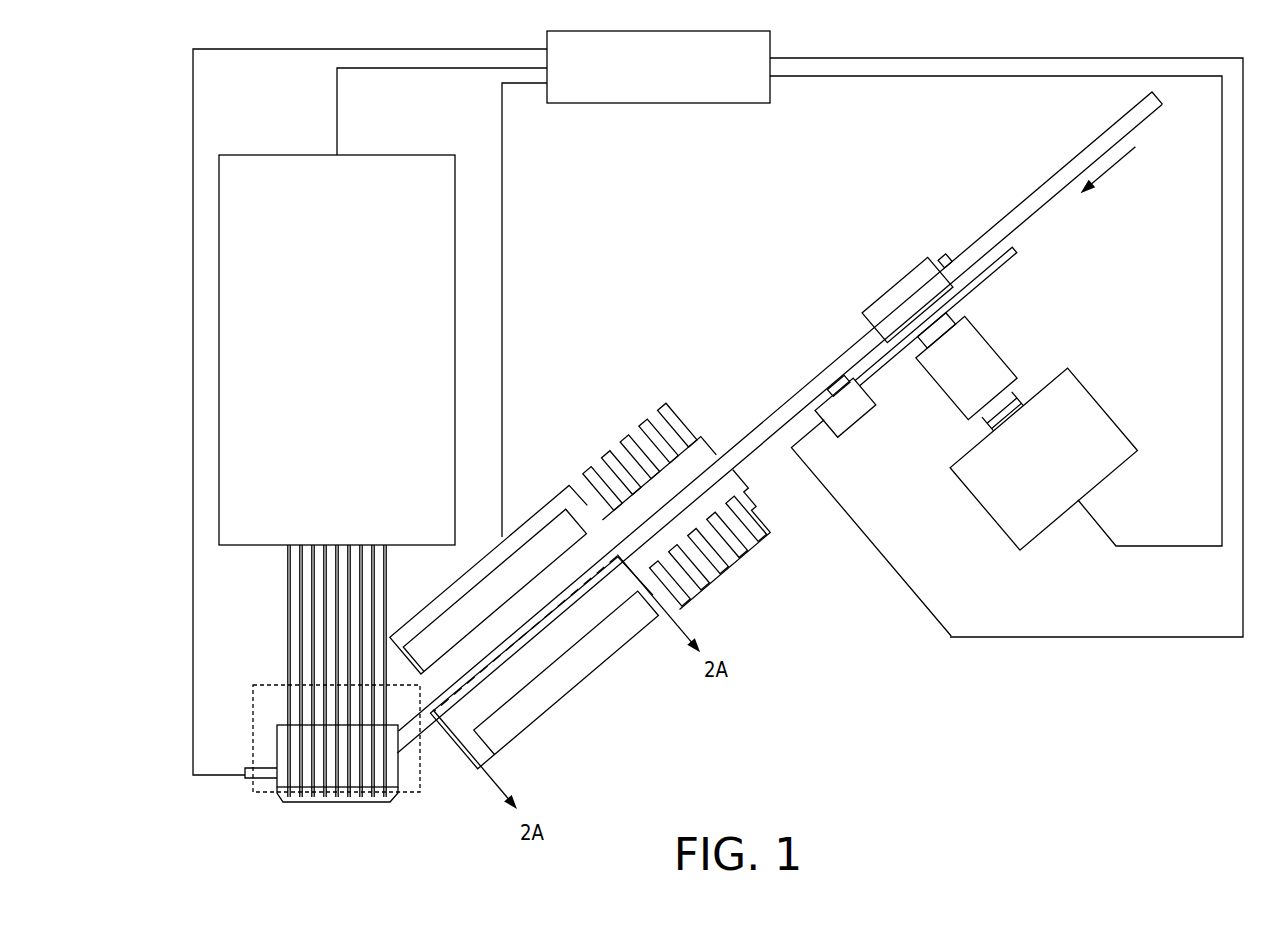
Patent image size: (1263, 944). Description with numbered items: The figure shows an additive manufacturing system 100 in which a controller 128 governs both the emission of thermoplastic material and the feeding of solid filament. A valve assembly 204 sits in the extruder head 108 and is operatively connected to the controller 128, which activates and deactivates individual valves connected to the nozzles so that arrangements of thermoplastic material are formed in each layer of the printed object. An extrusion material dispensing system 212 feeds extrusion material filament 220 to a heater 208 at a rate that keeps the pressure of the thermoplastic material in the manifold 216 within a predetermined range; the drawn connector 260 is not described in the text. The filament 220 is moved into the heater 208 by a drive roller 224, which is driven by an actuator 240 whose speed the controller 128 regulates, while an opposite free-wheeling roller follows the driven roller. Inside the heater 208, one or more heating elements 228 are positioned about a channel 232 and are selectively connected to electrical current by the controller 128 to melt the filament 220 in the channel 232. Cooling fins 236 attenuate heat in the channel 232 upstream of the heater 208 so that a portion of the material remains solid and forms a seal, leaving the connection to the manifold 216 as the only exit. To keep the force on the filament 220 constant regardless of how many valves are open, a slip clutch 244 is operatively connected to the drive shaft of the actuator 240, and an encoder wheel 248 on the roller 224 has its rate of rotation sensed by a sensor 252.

The additive manufacturing system 100 is at (155, 82).
The controller 128 is at (658, 104).
The valve assembly 204 is at (286, 153).
The extruder head 108 is at (250, 672).
The manifold 216 is at (400, 768).
The connector 260 is at (248, 782).
The extrusion material filament 220 is at (1026, 197).
The drive roller 224 is at (898, 282).
The encoder wheel 248 is at (880, 370).
The sensor 252 is at (840, 437).
The extrusion material dispensing system 212 is at (955, 552).
The slip clutch 244 is at (1010, 358).
The actuator 240 is at (1108, 412).
The heater 208 is at (608, 575).
The heating elements 228 is at (540, 528).
The cooling fins 236 is at (663, 405).
The channel 232 is at (480, 677).